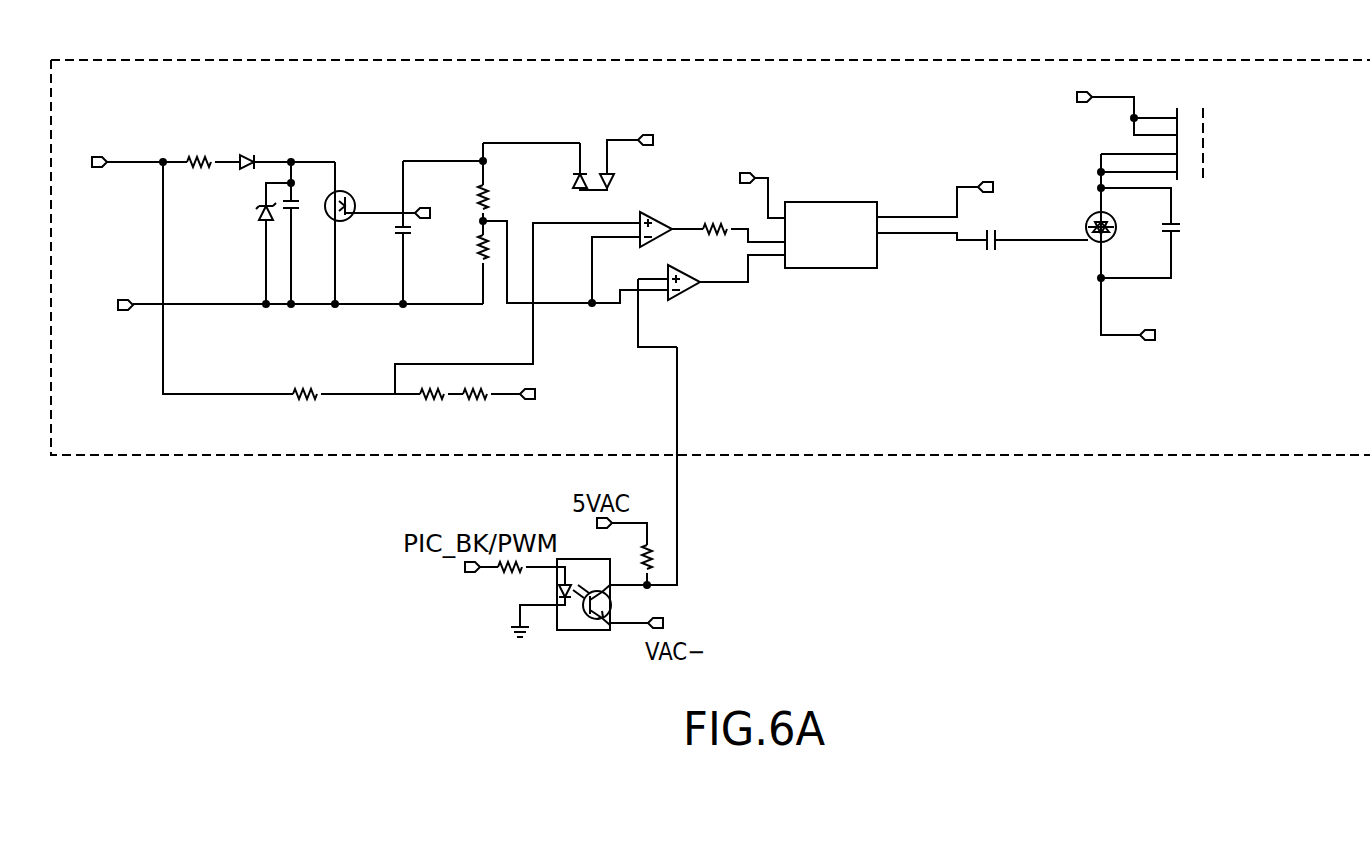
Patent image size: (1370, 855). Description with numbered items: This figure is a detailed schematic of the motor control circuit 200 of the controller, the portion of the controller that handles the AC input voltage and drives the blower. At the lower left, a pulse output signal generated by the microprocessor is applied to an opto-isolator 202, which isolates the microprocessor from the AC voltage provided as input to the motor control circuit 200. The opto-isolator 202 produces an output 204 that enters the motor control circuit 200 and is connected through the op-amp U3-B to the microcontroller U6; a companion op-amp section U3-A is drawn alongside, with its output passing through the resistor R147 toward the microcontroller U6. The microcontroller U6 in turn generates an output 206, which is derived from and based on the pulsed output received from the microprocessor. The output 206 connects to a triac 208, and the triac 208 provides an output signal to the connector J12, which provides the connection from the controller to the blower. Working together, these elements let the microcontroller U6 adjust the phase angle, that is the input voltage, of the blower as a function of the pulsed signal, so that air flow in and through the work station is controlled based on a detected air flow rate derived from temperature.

The motor control circuit 200 is at (1250, 58).
The opto-isolator 202 is at (578, 631).
The output of the opto-isolator 204 is at (677, 518).
The output of microcontroller U6 206 is at (916, 234).
The triac 208 is at (1092, 246).
The connector J12 is at (1208, 140).
The microcontroller U6 is at (845, 202).
The op-amp U3-A is at (659, 215).
The op-amp U3-B is at (681, 298).
The resistor R147 is at (728, 244).